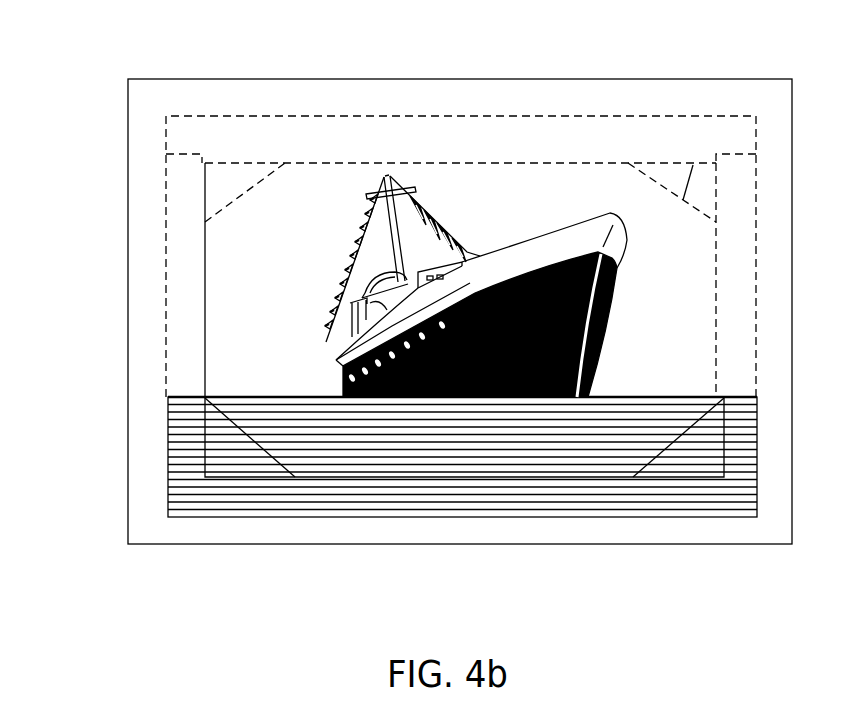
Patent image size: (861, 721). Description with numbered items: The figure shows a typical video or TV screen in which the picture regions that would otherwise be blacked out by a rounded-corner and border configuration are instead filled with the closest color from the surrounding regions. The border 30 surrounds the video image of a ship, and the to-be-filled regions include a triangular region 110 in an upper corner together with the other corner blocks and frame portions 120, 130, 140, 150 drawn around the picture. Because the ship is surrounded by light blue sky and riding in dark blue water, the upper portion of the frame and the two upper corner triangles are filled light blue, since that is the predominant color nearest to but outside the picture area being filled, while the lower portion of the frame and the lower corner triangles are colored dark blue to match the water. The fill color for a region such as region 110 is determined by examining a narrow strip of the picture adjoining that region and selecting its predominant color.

The border 30 is at (138, 399).
The triangular region 110 is at (230, 180).
The frame 120 is at (698, 115).
The liquid layer 130 is at (233, 463).
The reflection portion 140 is at (670, 475).
The base 150 is at (442, 508).